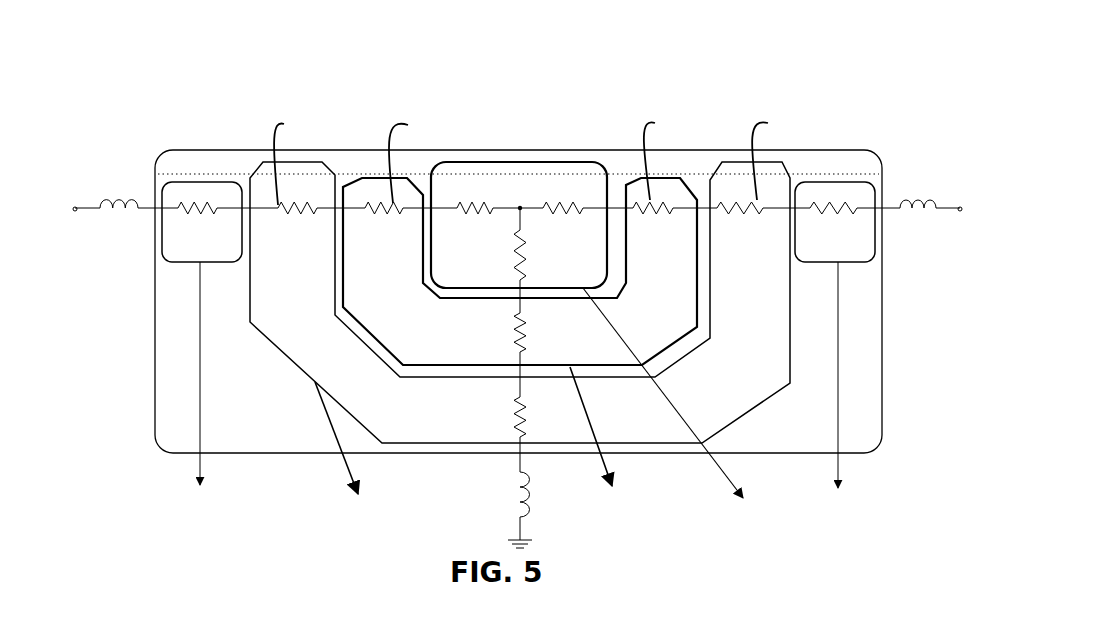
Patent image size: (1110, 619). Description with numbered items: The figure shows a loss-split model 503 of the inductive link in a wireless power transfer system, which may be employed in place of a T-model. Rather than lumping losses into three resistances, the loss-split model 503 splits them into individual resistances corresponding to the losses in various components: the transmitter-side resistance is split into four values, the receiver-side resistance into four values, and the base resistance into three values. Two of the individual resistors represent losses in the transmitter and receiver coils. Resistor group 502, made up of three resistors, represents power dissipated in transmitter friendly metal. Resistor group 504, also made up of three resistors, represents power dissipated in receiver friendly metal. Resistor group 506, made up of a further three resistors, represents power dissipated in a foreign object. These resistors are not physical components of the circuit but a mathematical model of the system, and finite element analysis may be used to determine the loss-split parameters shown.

The loss-split model 503 is at (310, 72).
The resistor group 504 is at (252, 174).
The resistor group 502 is at (626, 182).
The resistor group 506 is at (510, 161).